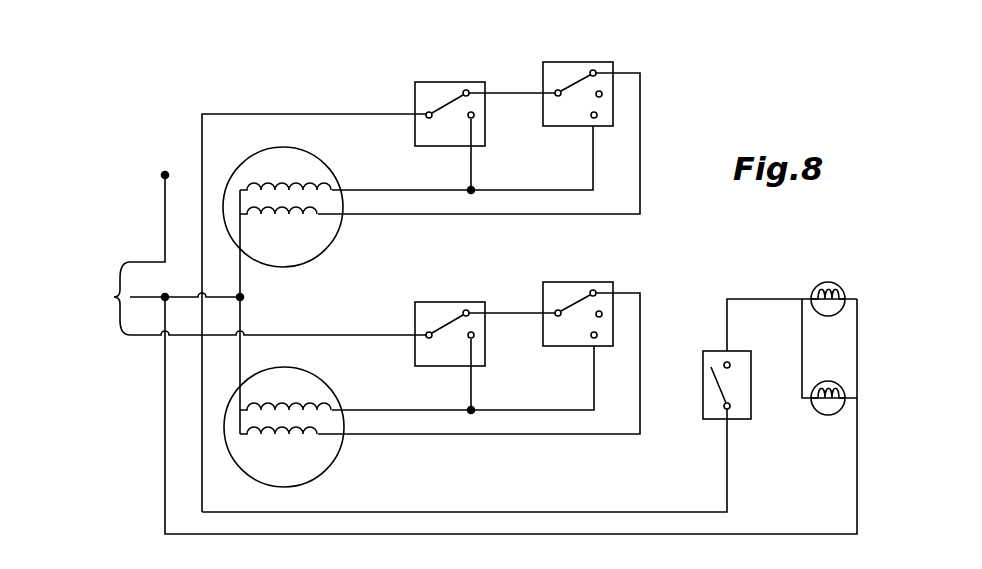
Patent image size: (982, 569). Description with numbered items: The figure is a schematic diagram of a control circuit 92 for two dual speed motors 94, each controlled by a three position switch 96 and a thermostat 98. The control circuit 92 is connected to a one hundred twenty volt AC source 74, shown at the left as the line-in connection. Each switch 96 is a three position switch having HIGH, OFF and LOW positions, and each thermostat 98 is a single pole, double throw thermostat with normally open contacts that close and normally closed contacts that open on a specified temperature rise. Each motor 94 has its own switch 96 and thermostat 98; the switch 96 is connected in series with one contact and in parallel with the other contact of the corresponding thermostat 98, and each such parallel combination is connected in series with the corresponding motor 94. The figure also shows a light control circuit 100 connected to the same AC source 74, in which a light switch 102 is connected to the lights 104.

The 120 volt AC source 74 is at (85, 294).
The control circuit 92 is at (162, 132).
The dual speed motor 94 is at (326, 159).
The three position switch 96 is at (565, 62).
The thermostat 98 is at (436, 82).
The light control circuit 100 is at (694, 309).
The light switch 102 is at (701, 388).
The lights 104 is at (826, 282).